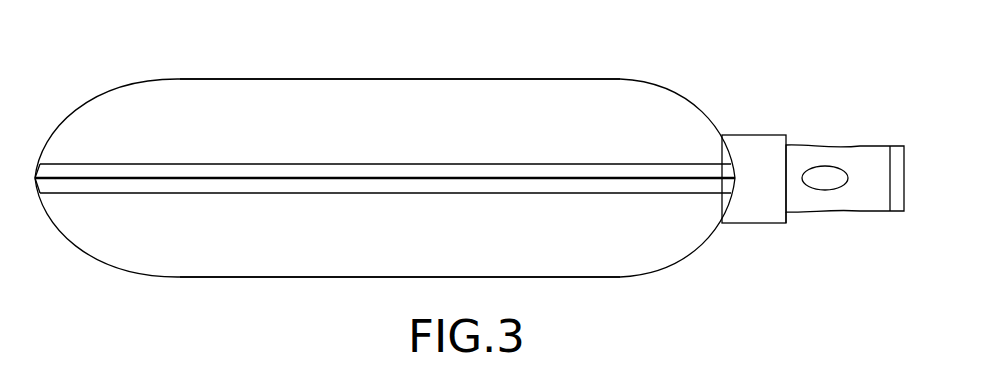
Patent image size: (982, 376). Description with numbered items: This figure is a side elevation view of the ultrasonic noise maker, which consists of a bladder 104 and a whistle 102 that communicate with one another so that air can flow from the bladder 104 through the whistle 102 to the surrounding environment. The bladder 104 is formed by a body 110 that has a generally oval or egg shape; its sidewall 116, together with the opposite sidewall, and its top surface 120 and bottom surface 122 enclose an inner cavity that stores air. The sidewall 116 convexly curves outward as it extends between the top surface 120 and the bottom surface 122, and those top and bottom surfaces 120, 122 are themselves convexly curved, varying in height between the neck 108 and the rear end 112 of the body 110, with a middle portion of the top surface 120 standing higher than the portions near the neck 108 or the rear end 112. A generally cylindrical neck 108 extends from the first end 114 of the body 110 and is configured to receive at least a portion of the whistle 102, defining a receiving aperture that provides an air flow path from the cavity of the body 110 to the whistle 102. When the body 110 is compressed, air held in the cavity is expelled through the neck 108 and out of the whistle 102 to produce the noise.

The whistle 102 is at (858, 152).
The bladder 104 is at (183, 78).
The neck 108 is at (757, 200).
The body 110 is at (260, 240).
The rear end 112 is at (33, 180).
The first end 114 is at (787, 215).
The sidewall 116 is at (173, 178).
The top surface 120 is at (462, 78).
The bottom surface 122 is at (597, 277).